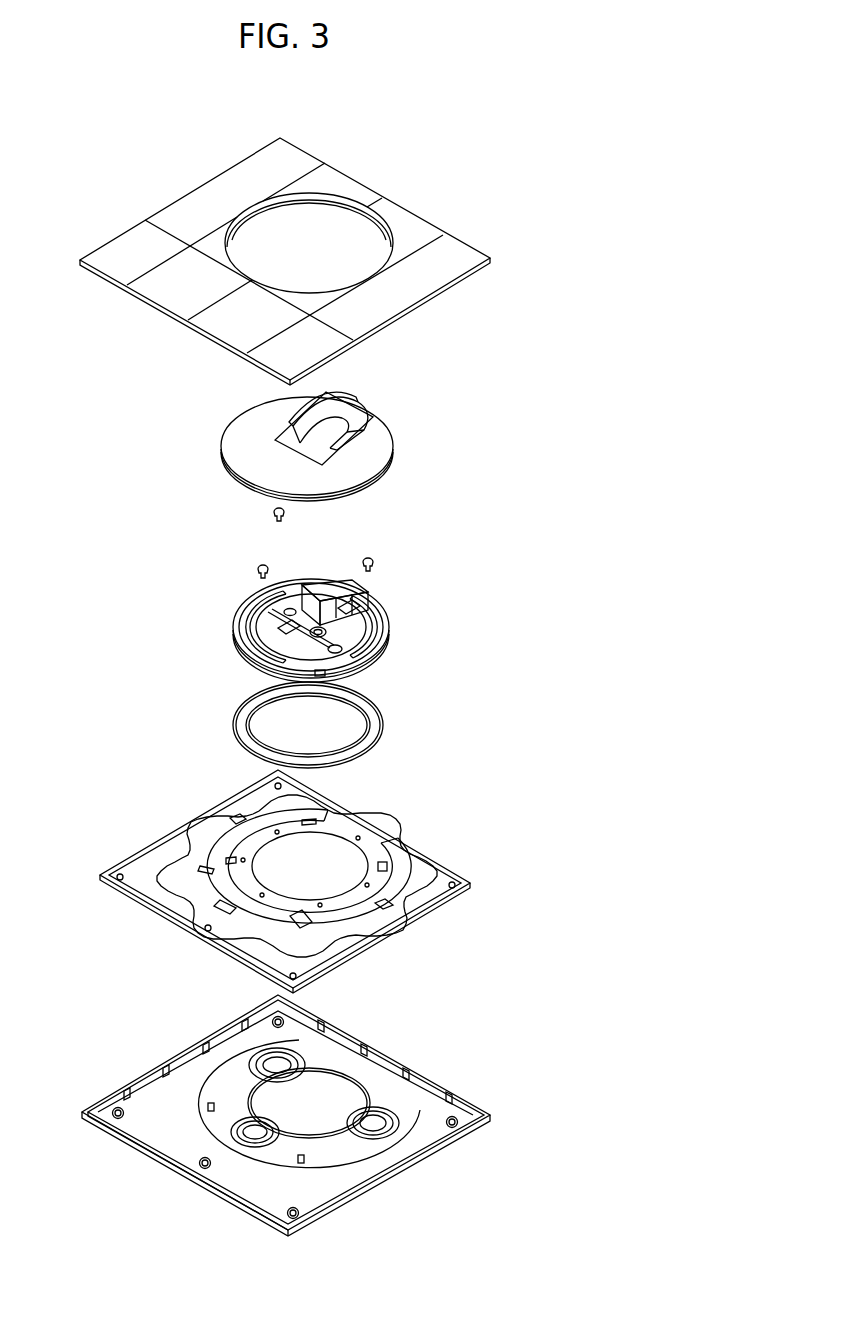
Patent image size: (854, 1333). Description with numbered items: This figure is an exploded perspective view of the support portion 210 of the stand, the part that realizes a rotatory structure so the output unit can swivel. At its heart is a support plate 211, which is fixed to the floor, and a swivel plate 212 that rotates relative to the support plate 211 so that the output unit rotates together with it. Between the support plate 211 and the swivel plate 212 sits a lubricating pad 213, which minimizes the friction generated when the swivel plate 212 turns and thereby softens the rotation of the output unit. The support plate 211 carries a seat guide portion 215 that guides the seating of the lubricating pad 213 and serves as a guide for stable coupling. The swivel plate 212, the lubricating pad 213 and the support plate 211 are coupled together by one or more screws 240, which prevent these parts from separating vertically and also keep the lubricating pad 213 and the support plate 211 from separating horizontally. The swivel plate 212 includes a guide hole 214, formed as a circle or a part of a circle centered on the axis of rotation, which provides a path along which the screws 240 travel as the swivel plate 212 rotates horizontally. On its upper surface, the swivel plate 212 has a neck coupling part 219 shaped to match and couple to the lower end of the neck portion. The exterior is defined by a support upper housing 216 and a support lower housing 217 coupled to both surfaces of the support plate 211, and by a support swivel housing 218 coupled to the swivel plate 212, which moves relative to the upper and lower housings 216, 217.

The support portion 210 is at (44, 131).
The support upper housing 216 is at (121, 240).
The support swivel housing 218 is at (378, 437).
The screw 240 is at (246, 556).
The swivel plate 212 is at (412, 630).
The guide hole 214 is at (240, 633).
The neck coupling part 219 is at (368, 589).
The lubricating pad 213 is at (216, 723).
The support plate 211 is at (422, 820).
The seat guide portion 215 is at (242, 852).
The support lower housing 217 is at (123, 1086).